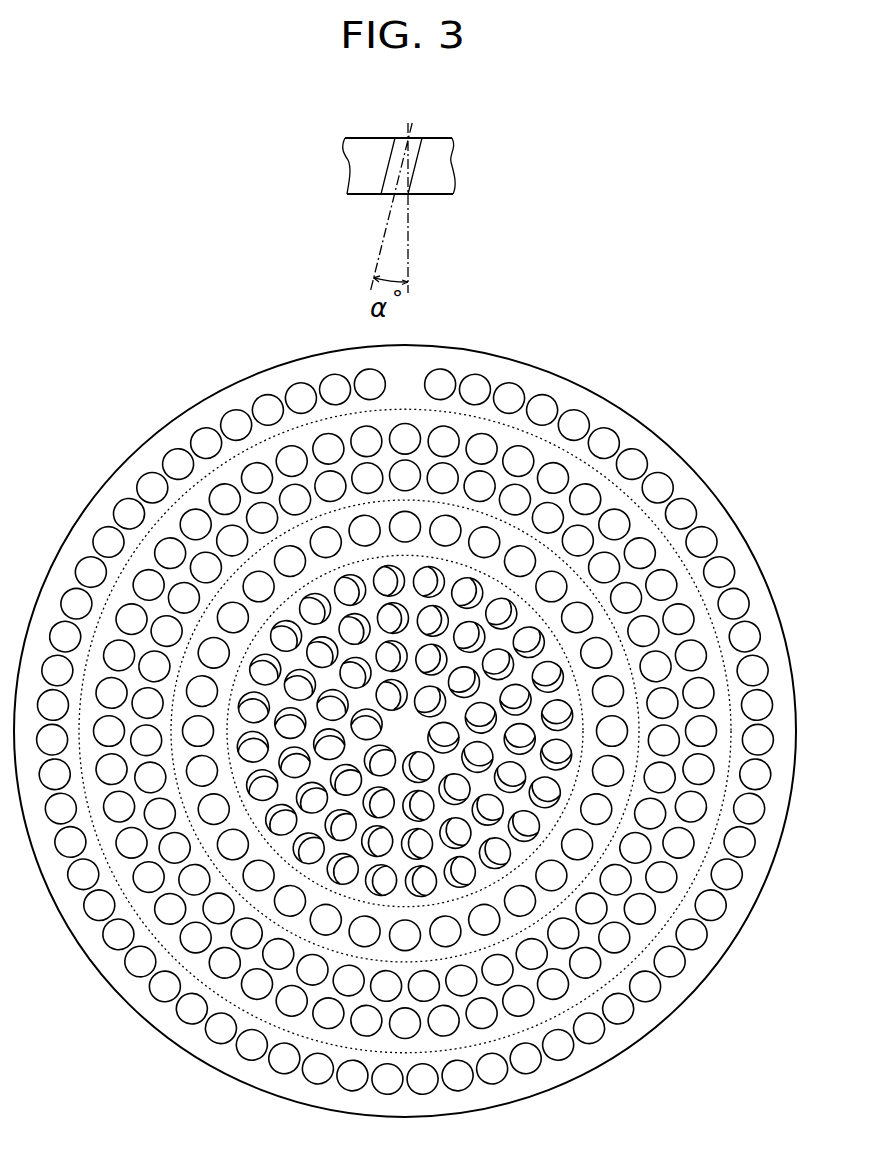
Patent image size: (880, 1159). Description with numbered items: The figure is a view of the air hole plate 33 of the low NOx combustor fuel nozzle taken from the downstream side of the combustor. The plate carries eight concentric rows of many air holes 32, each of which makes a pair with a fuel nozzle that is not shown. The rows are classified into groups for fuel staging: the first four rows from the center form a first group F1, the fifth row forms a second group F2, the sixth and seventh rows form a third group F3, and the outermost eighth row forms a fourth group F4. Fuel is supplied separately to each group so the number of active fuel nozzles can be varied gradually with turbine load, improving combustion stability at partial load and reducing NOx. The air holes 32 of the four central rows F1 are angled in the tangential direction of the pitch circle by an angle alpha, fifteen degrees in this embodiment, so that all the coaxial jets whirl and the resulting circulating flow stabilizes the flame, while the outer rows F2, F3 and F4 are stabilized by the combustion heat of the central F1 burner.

The air hole 32 is at (387, 170).
The air hole plate 33 is at (437, 167).
The first group F1 is at (457, 612).
The second group F2 is at (607, 670).
The third group F3 is at (703, 712).
The fourth group F4 is at (747, 827).